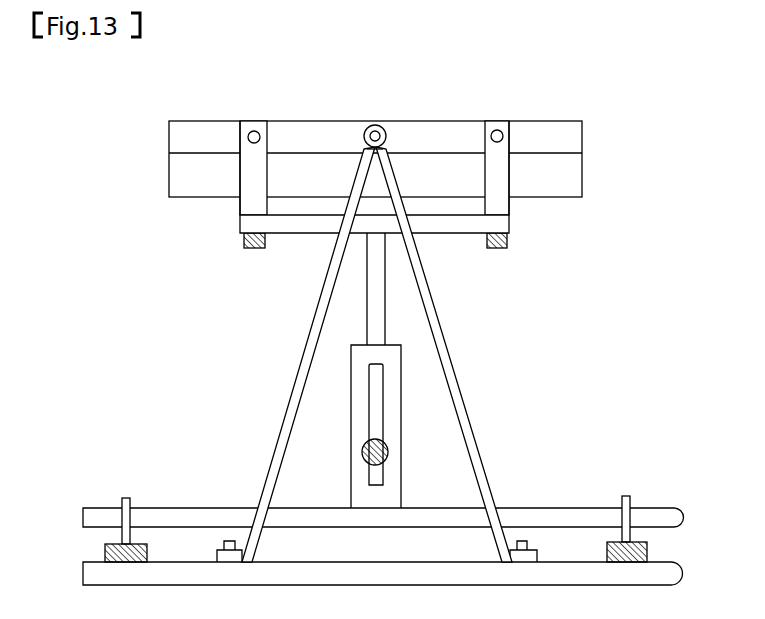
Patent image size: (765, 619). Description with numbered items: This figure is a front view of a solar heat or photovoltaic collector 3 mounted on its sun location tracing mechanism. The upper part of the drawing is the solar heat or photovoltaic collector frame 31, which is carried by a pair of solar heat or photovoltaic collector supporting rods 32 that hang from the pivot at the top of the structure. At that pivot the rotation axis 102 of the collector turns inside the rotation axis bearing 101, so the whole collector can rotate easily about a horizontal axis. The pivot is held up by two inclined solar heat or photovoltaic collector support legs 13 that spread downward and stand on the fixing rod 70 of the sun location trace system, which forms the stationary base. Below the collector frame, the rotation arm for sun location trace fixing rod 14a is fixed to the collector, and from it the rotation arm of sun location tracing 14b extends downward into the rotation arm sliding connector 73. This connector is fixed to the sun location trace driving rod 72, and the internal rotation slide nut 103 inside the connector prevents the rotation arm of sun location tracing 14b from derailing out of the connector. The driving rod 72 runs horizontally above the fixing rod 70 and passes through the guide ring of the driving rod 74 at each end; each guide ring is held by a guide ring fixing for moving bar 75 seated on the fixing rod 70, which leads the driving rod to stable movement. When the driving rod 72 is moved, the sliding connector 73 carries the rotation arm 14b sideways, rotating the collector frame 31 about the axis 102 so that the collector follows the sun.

The solar heat or photovoltaic collector 3 is at (190, 173).
The solar heat or photovoltaic collector frame 31 is at (302, 138).
The solar heat or photovoltaic collector supporting rod 32 is at (255, 197).
The rotation arm for sun location trace fixing rod 14a is at (467, 223).
The rotation arm of sun location tracing 14b is at (378, 333).
The solar heat or photovoltaic collector support legs 13 is at (283, 425).
The rotation arm sliding connector 73 is at (392, 400).
The internal rotation slide nut 103 is at (390, 451).
The rotation axis bearing for solar-heat or photovoltaic collector 101 is at (387, 123).
The rotation axis solar heat or photovoltaic collector 102 is at (374, 125).
The sun location trace driving rod 72 is at (587, 515).
The fixing rod of the sun location trace system 70 is at (663, 573).
The guide ring of the driving rod 74 is at (630, 497).
The guide ring fixing for moving bar 75 is at (647, 548).